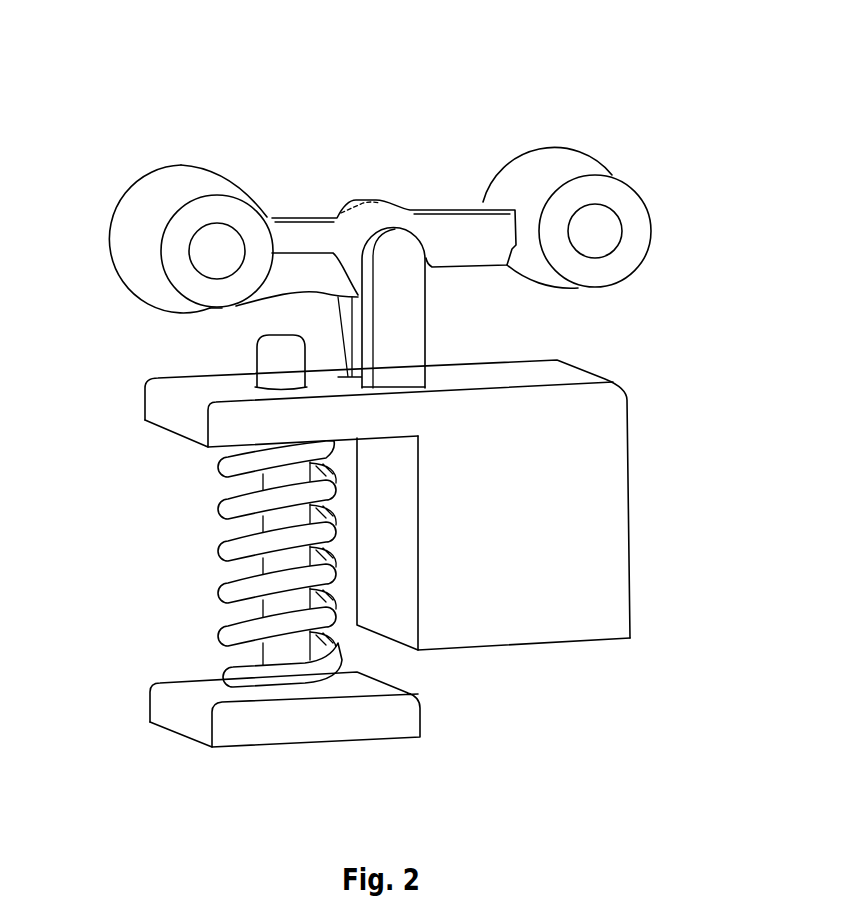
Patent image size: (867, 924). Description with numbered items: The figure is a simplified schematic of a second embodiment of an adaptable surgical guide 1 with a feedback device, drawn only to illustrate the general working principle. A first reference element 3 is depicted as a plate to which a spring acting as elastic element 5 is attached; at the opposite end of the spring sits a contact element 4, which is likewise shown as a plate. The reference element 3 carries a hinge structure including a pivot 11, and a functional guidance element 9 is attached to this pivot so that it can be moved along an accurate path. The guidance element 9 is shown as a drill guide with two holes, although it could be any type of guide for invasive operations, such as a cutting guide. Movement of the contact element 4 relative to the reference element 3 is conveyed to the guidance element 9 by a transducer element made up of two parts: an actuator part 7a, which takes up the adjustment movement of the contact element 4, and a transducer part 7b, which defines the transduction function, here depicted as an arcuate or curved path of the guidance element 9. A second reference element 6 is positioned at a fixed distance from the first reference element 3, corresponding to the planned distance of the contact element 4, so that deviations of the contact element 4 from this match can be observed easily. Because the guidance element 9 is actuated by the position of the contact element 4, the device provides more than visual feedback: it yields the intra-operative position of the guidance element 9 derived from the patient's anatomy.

The surgical guide 1 is at (127, 125).
The reference element 3 is at (580, 370).
The contact element 4 is at (418, 708).
The elastic element 5 is at (236, 552).
The second reference element 6 is at (632, 638).
The actuator part 7a is at (269, 356).
The transducer part 7b is at (245, 310).
The functional guidance element 9 is at (651, 218).
The pivot 11 is at (403, 262).